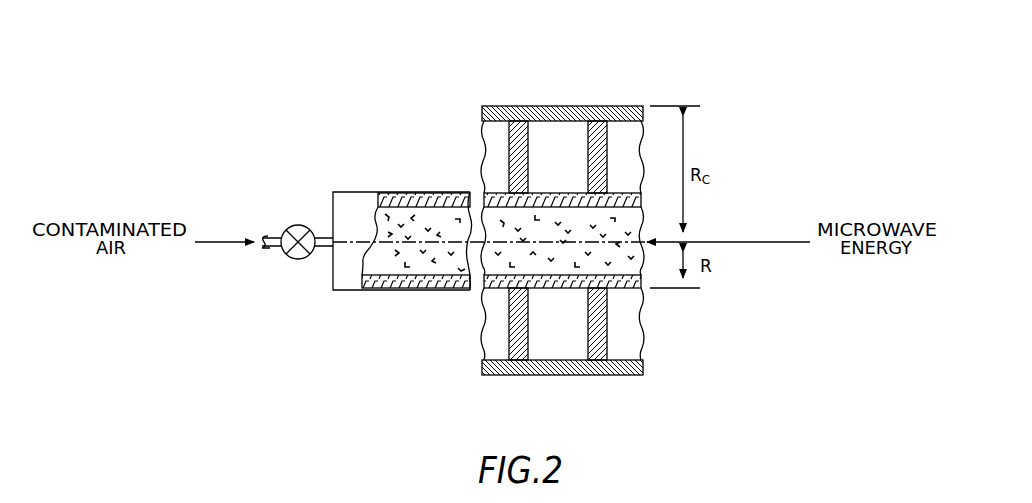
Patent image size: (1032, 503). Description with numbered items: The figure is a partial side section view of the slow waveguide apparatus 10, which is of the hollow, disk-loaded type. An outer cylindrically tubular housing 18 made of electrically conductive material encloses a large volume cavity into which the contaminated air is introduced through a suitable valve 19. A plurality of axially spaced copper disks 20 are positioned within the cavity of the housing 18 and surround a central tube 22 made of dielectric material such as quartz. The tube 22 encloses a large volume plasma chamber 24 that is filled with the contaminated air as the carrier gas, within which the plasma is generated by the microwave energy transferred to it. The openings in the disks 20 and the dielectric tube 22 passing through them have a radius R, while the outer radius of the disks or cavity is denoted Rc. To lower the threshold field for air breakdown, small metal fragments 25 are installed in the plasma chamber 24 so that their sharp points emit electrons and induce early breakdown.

The slow waveguide apparatus 10 is at (574, 193).
The outer cylindrically tubular housing 18 is at (546, 106).
The valve 19 is at (298, 233).
The copper disks 20 is at (608, 146).
The central tube 22 is at (435, 290).
The plasma chamber 24 is at (405, 215).
The small metal fragments 25 is at (432, 215).